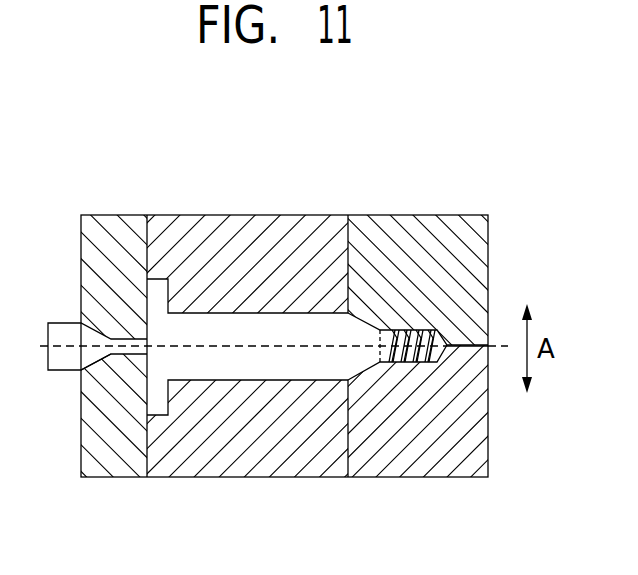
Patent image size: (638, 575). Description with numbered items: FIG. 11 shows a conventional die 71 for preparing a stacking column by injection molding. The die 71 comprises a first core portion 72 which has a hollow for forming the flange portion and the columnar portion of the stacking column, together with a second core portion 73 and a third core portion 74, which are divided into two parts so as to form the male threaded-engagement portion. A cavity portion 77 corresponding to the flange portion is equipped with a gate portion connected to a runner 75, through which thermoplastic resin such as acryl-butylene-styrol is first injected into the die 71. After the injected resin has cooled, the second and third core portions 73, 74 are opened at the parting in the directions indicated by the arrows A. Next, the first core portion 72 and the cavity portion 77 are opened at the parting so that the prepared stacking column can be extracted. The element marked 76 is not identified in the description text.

The die 71 is at (367, 184).
The first core portion 72 is at (250, 248).
The second core portion 73 is at (432, 248).
The third core portion 74 is at (425, 450).
The runner 75 is at (132, 352).
The core pin 76 is at (62, 338).
The cavity portion 77 is at (105, 243).